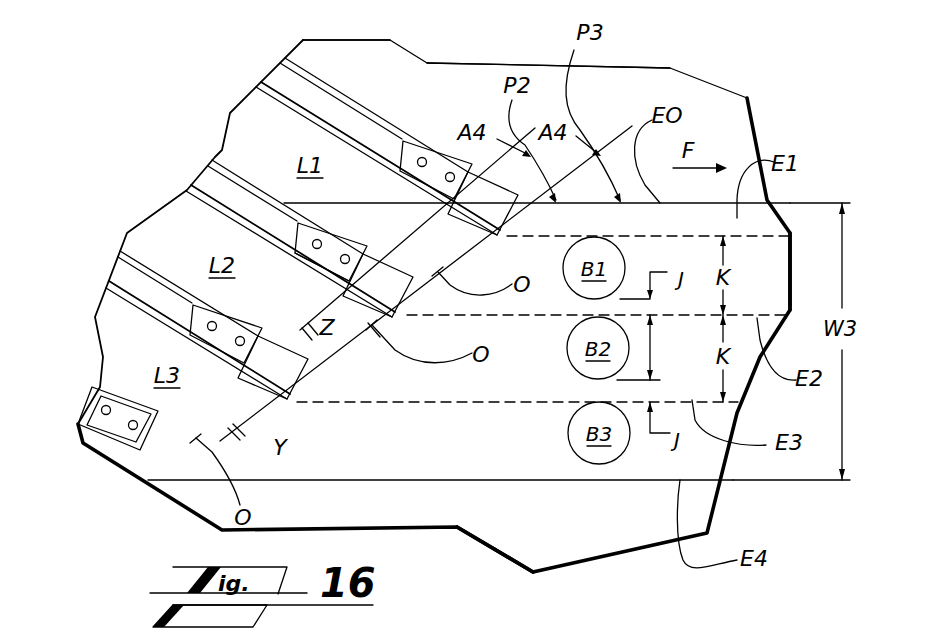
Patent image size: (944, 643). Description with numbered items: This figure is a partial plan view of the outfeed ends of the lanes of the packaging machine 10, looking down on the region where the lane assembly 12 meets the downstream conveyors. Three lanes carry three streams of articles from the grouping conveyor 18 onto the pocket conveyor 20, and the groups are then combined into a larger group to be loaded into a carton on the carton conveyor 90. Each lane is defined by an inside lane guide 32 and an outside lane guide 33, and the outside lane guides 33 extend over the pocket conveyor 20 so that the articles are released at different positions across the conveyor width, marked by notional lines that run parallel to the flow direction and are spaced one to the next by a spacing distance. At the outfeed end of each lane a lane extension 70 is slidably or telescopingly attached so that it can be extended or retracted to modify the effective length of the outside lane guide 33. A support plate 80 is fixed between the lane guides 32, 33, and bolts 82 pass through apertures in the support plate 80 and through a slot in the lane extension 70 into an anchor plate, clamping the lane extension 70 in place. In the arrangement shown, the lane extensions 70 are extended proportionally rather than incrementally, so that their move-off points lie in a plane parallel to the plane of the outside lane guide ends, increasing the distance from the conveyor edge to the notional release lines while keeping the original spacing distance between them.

The packaging machine 10 is at (703, 48).
The lane assembly 12 is at (285, 28).
The grouping conveyor 18 is at (598, 103).
The pocket conveyor 20 is at (748, 280).
The inside lane guide 32 is at (222, 134).
The outside lane guide 33 is at (280, 107).
The lane extension 70 is at (478, 214).
The support plate 80 is at (342, 266).
The bolts 82 is at (312, 215).
The carton conveyor 90 is at (532, 527).